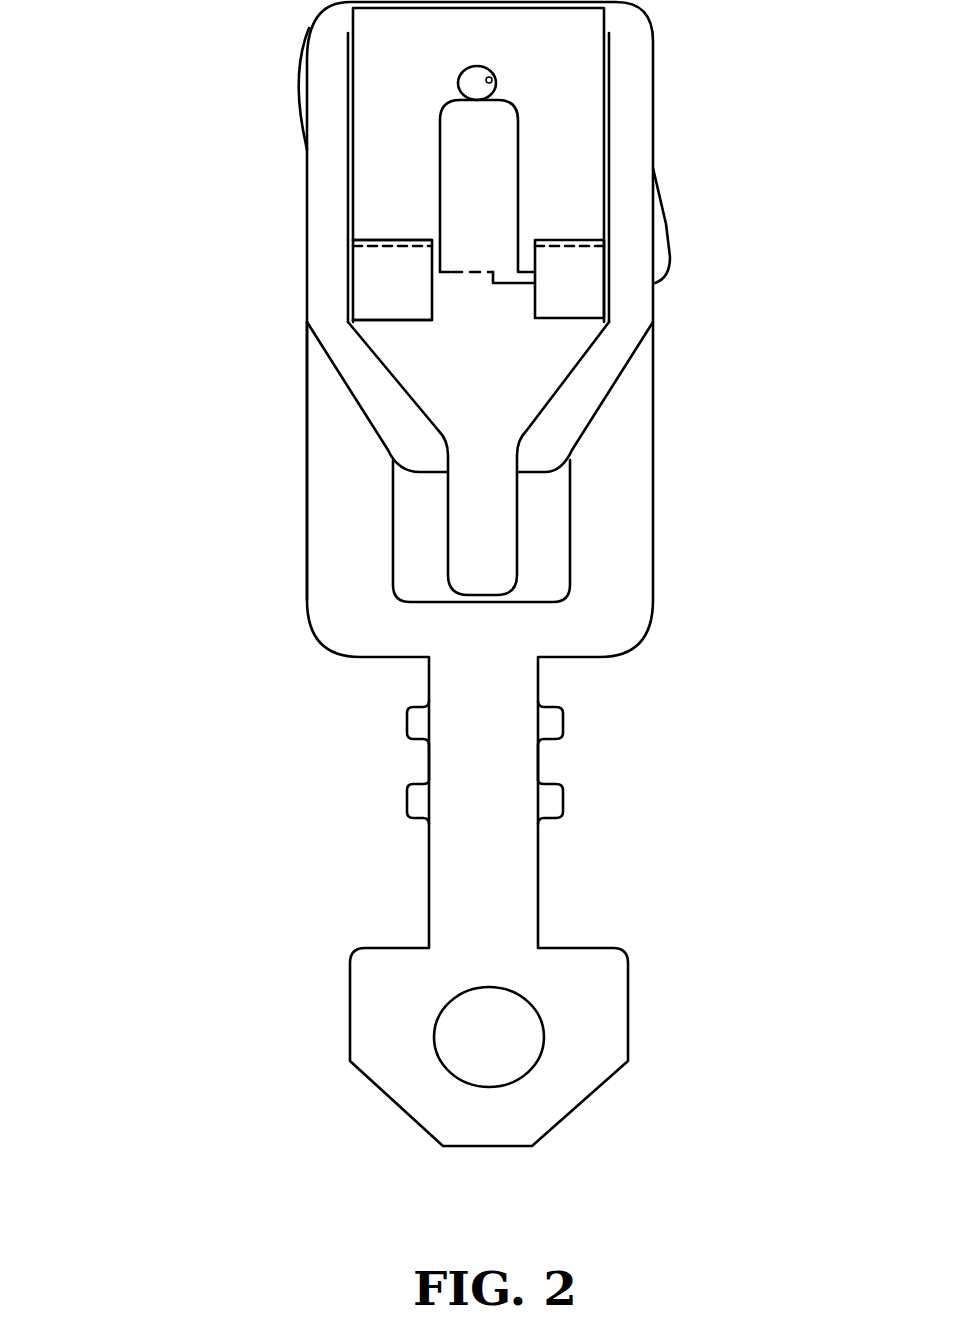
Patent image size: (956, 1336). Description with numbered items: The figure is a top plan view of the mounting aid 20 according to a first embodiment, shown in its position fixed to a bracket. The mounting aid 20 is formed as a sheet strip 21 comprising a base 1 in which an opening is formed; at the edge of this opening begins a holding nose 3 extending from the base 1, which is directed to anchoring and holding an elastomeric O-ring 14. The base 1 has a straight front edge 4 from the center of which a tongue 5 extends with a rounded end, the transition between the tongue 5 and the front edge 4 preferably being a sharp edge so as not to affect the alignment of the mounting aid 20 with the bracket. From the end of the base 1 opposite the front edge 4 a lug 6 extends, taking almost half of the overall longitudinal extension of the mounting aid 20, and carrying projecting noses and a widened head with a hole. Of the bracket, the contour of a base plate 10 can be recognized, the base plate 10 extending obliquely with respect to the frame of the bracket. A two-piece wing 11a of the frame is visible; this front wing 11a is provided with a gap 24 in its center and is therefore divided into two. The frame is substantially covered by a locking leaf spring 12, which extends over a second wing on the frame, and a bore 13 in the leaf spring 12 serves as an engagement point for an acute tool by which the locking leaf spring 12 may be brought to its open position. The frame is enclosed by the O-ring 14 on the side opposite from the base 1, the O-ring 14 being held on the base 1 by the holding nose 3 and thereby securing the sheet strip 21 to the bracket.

The base 1 is at (627, 448).
The holding nose 3 is at (497, 542).
The front edge 4 is at (535, 283).
The tongue 5 is at (493, 168).
The lug 6 is at (518, 765).
The base plate 10 is at (661, 244).
The two-piece wing 11a is at (413, 303).
The locking leaf spring 12 is at (580, 118).
The bore 13 is at (496, 78).
The O-ring 14 is at (600, 379).
The mounting aid 20 is at (123, 160).
The sheet strip 21 is at (337, 589).
The gap 24 is at (440, 267).